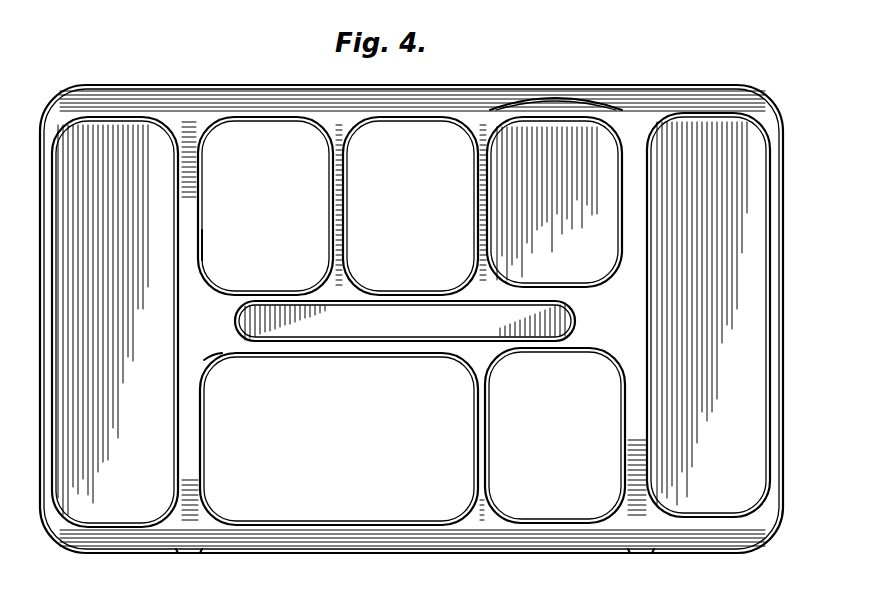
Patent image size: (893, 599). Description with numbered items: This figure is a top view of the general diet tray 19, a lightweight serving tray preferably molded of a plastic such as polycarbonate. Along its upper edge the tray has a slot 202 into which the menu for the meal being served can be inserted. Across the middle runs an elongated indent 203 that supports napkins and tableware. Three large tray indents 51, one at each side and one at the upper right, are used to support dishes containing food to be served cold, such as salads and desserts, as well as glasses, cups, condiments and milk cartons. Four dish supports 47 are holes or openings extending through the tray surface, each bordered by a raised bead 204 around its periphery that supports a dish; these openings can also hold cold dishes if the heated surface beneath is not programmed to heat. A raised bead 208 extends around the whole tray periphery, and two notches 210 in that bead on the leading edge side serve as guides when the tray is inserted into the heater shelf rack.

The general diet tray 19 is at (552, 86).
The dish supports 47 is at (278, 130).
The tray indents 51 is at (150, 362).
The slot 202 is at (603, 86).
The elongated indent 203 is at (432, 335).
The raised bead 204 is at (206, 262).
The raised bead 208 is at (714, 86).
The notches 210 is at (180, 556).